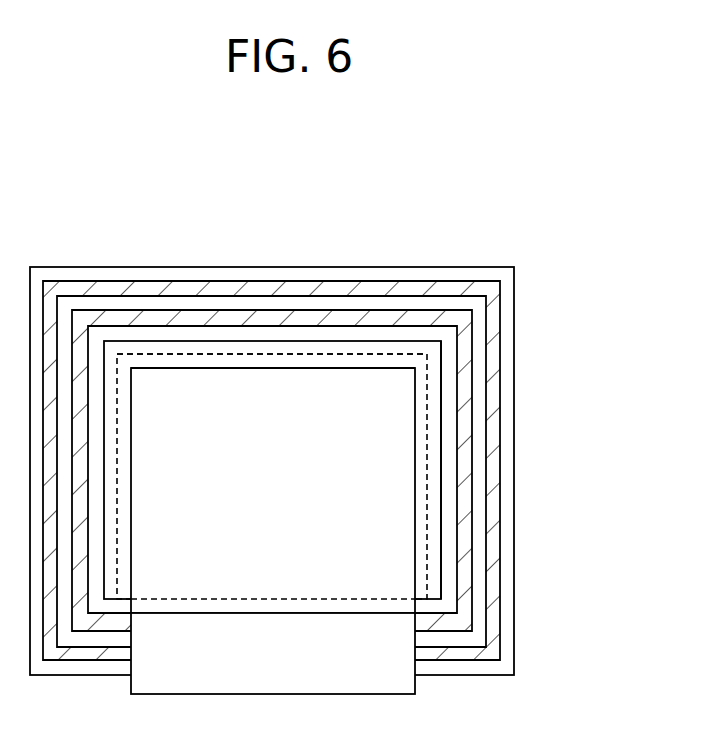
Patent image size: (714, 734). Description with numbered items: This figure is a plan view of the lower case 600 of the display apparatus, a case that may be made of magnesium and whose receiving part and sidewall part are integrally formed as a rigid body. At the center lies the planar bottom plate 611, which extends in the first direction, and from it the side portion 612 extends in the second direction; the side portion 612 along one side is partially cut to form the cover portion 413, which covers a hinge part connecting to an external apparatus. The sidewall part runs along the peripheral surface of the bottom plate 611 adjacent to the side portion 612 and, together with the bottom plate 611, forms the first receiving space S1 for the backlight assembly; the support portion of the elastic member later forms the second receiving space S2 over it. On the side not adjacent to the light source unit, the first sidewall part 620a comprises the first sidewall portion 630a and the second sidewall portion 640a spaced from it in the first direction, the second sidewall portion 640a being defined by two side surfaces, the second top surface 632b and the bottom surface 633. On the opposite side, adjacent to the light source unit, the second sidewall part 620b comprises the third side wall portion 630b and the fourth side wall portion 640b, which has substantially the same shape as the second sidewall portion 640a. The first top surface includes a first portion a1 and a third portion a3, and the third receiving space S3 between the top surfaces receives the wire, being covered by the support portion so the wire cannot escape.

The lower case 600 is at (290, 191).
The side portion 612 is at (507, 545).
The bottom surface 633 is at (497, 507).
The second top surface 632b is at (482, 468).
The first portion a1 is at (433, 402).
The third portion a3 is at (447, 436).
The third receiving space S3 is at (458, 573).
The second receiving space S2 is at (318, 362).
The first receiving space S1 is at (333, 379).
The bottom plate 611 is at (313, 555).
The cover portion 413 is at (393, 685).
The second sidewall portion 640a is at (72, 310).
The first sidewall portion 630a is at (130, 368).
The first sidewall part 620a is at (125, 189).
The fourth side wall portion 640b is at (472, 311).
The third side wall portion 630b is at (415, 368).
The second sidewall part 620b is at (620, 275).